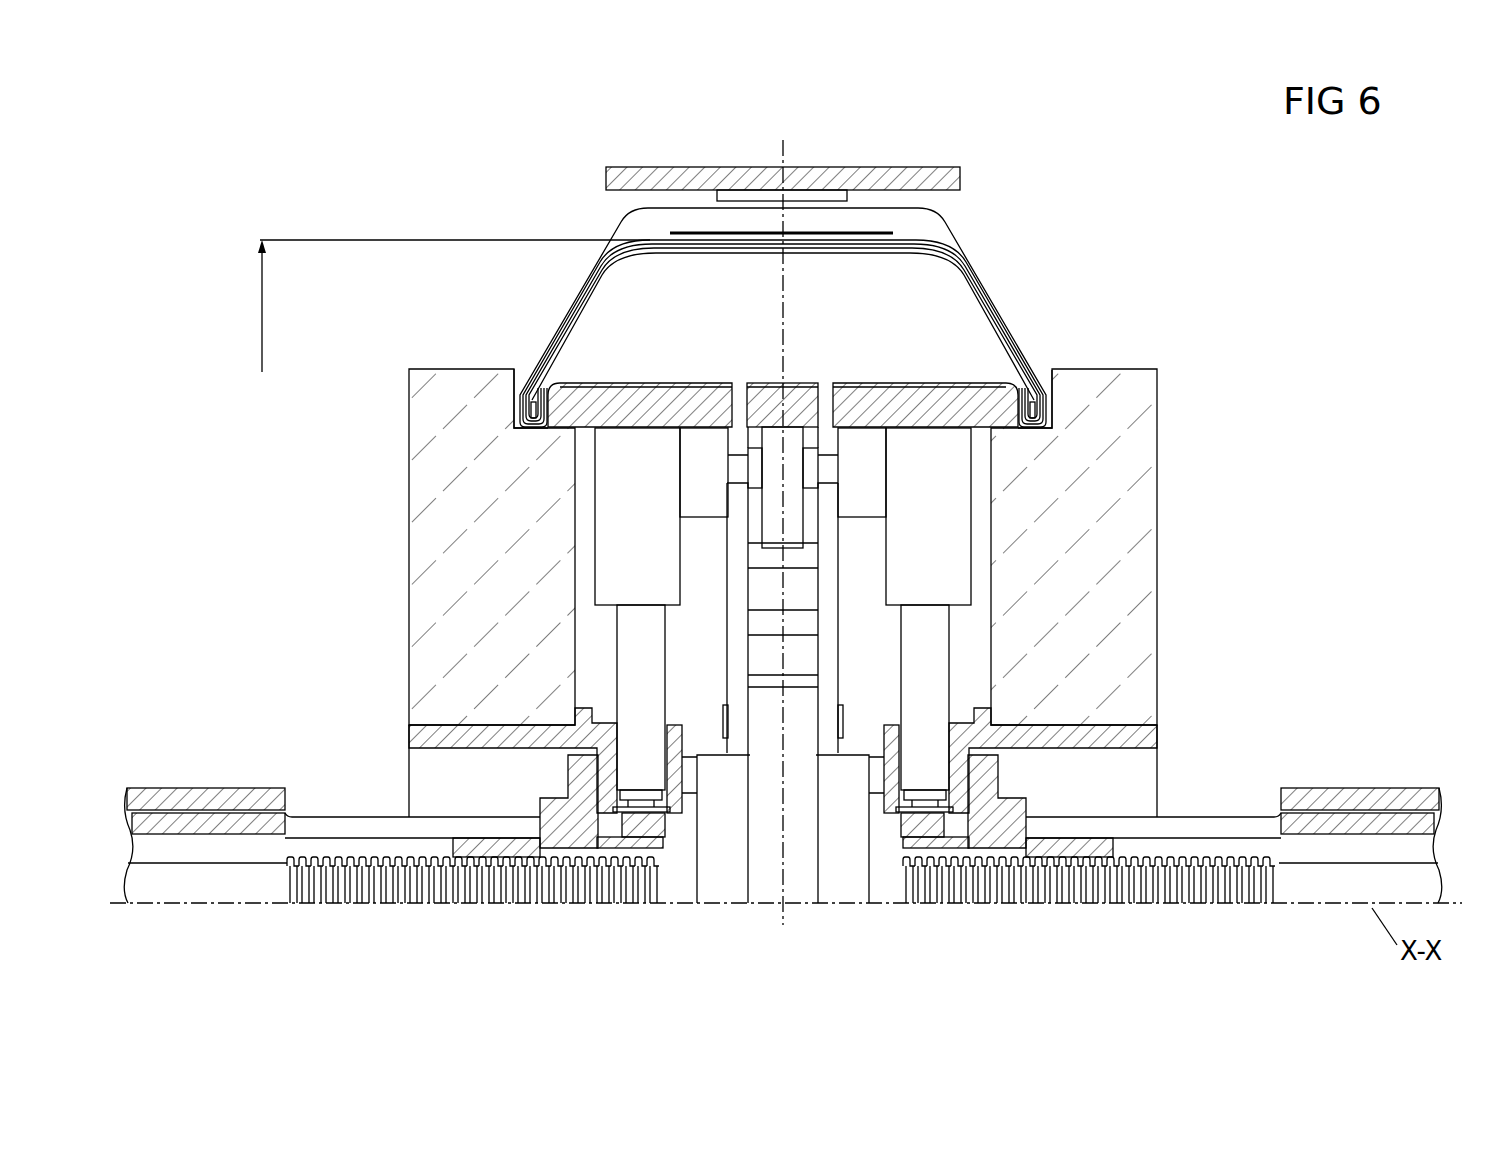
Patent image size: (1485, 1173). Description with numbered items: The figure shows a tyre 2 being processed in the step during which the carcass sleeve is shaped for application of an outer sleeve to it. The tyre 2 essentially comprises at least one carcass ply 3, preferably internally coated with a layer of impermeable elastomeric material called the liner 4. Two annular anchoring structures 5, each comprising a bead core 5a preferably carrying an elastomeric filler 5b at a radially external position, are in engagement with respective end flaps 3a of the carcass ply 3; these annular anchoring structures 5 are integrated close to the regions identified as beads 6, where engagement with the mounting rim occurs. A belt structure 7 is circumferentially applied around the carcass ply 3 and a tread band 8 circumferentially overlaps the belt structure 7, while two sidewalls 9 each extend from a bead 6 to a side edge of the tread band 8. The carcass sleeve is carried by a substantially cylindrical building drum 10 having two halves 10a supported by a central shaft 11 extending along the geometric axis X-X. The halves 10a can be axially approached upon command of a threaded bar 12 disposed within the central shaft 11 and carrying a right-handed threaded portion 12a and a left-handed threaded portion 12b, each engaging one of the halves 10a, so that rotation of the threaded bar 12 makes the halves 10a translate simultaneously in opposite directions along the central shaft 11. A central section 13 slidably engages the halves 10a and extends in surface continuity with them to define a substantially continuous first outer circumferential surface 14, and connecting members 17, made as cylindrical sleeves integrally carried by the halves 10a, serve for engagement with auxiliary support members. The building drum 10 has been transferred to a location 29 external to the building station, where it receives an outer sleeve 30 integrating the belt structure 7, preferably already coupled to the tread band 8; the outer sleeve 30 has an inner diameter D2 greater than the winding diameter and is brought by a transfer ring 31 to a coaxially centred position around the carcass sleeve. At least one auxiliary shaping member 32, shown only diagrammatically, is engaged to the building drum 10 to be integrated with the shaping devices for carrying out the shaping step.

The tyre 2 is at (968, 212).
The carcass ply 3 is at (972, 273).
The end flaps of the carcass ply 3a is at (1022, 372).
The liner 4 is at (893, 258).
The annular anchoring structures 5 is at (1060, 376).
The bead core 5a is at (538, 410).
The elastomeric filler 5b is at (1030, 392).
The beads 6 is at (516, 384).
The belt structure 7 is at (858, 232).
The tread band 8 is at (882, 217).
The sidewalls 9 is at (585, 283).
The building drum 10 is at (716, 908).
The halves of the building drum 10a is at (697, 403).
The central shaft 11 is at (175, 795).
The threaded bar 12 is at (225, 880).
The right-handed threaded portion 12a is at (505, 882).
The left-handed threaded portion 12b is at (1020, 880).
The central section 13 is at (798, 405).
The first outer circumferential surface 14 is at (643, 383).
The connecting members 17 is at (450, 745).
The location 29 is at (1285, 519).
The outer sleeve 30 is at (812, 208).
The transfer ring 31 is at (683, 167).
The auxiliary shaping member 32 is at (447, 366).
The inner diameter of the outer sleeve D2 is at (262, 248).